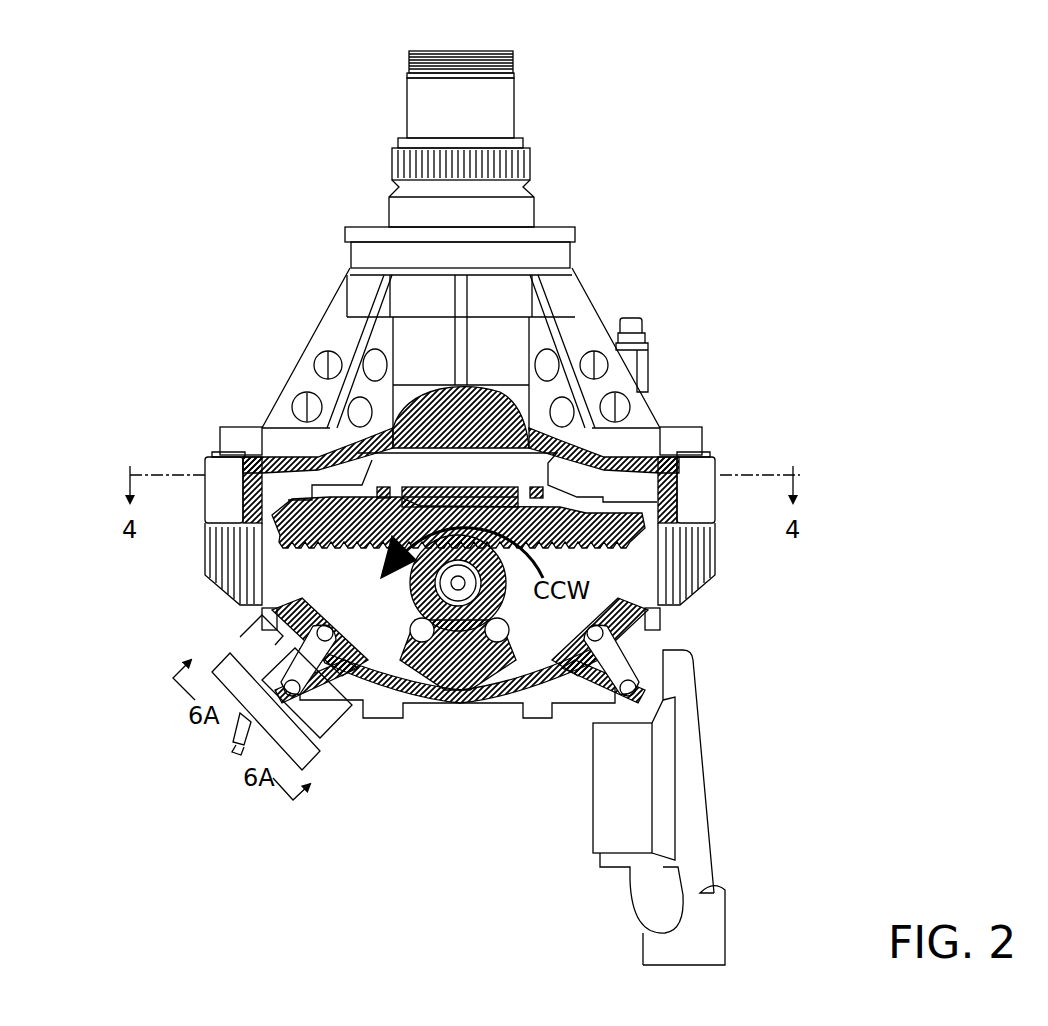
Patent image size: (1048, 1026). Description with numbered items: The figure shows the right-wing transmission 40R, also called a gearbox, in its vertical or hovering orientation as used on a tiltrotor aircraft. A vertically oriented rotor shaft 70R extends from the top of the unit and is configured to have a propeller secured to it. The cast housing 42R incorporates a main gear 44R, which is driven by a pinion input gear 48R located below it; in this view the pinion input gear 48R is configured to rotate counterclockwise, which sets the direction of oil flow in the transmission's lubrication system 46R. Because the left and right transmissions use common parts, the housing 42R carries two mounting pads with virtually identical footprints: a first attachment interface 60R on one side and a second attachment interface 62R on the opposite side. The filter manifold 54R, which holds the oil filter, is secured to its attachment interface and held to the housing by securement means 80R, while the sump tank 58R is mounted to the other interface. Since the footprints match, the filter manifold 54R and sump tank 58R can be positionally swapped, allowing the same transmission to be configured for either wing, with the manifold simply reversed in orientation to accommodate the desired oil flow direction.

The rotor shaft 70R is at (495, 97).
The transmission 40R is at (652, 170).
The housing 42R is at (590, 318).
The main gear 44R is at (310, 545).
The pinion input gear 48R is at (452, 597).
The lubrication system 46R is at (447, 725).
The first attachment interface 60R is at (262, 622).
The filter manifold 54R is at (317, 715).
The securement means 80R is at (237, 742).
The second attachment interface 62R is at (553, 723).
The sump tank 58R is at (607, 822).